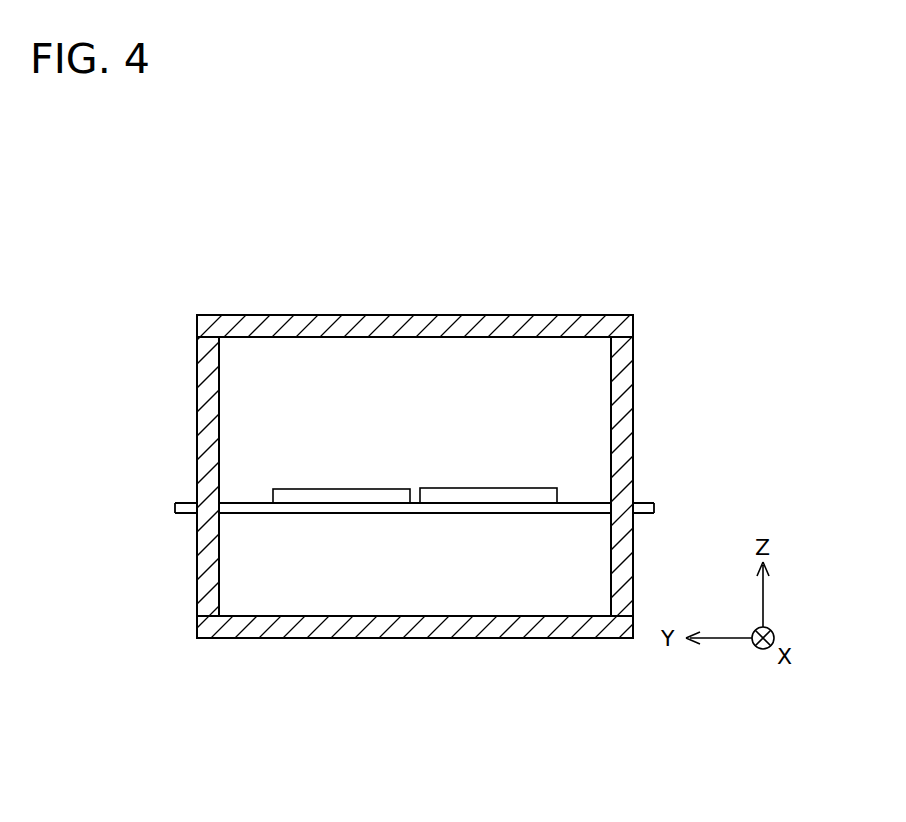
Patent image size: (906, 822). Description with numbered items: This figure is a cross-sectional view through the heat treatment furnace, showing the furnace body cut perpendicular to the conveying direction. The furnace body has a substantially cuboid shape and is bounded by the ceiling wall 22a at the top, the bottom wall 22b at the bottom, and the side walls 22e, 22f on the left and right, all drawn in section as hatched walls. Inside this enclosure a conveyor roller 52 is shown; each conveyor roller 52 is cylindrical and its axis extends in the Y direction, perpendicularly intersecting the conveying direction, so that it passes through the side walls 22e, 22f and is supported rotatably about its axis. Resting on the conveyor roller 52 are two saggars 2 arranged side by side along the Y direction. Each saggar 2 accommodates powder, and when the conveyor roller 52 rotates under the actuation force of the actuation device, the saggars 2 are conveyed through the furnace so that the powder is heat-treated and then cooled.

The ceiling wall 22a is at (258, 326).
The bottom wall 22b is at (286, 627).
The side wall 22e is at (206, 375).
The side wall 22f is at (622, 392).
The saggar 2 is at (341, 495).
The conveyor roller 52 is at (465, 508).